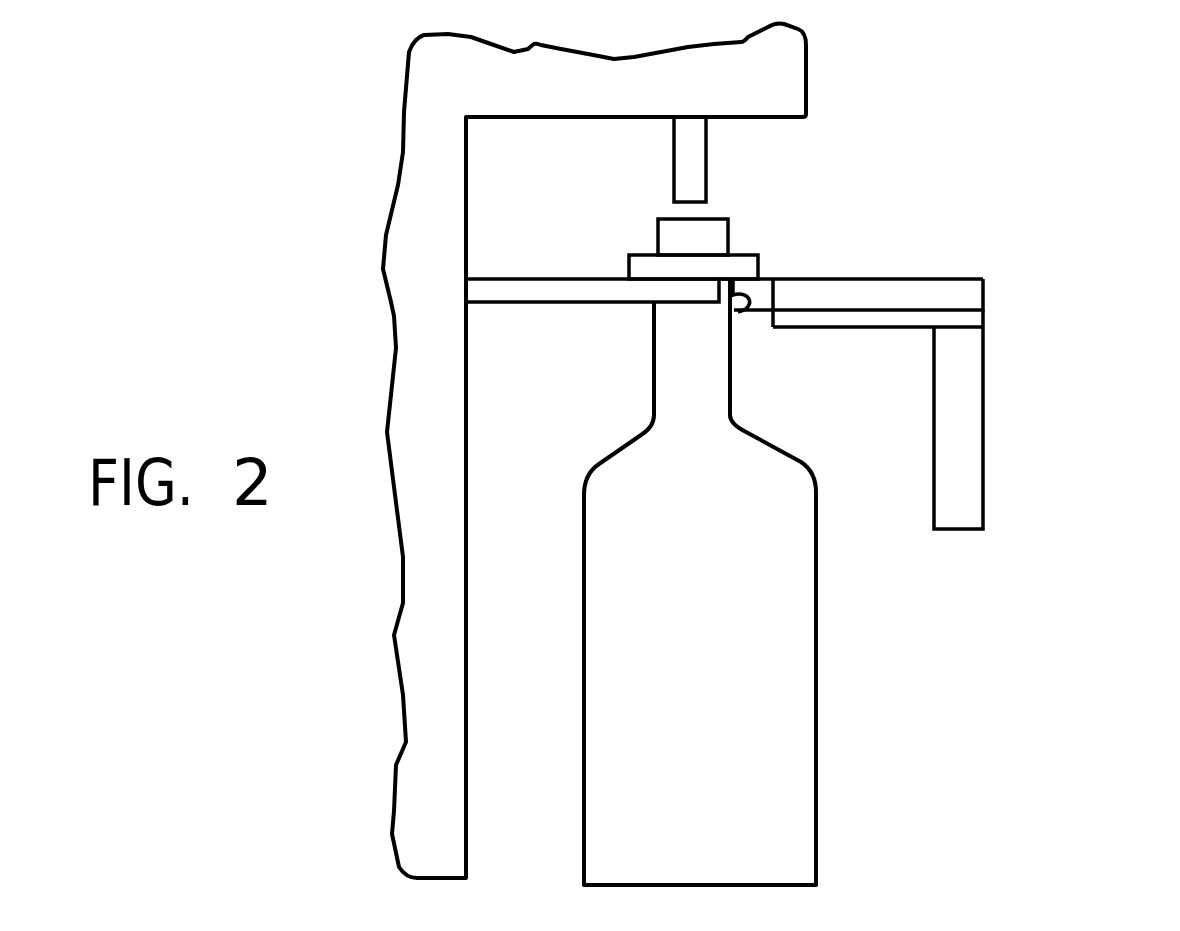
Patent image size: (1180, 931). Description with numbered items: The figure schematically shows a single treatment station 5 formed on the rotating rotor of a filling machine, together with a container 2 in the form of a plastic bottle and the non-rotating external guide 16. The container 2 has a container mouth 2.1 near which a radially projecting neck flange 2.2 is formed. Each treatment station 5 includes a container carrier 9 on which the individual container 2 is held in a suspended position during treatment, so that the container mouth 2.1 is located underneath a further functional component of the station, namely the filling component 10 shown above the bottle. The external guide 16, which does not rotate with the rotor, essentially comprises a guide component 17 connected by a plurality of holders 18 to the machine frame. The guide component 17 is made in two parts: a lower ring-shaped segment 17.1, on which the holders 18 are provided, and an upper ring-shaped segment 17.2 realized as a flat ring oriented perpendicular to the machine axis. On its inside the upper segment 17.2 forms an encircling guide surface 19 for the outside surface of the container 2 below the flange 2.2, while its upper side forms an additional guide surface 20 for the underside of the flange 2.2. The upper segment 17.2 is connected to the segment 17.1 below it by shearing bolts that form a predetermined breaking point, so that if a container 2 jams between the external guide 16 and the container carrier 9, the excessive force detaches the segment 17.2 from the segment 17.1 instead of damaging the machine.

The container 2 is at (793, 662).
The container mouth 2.1 is at (717, 212).
The neck flange 2.2 is at (743, 263).
The treatment station 5 is at (1028, 273).
The container carrier 9 is at (565, 287).
The filling component 10 is at (693, 157).
The external guide 16 is at (865, 260).
The guide component 17 is at (925, 268).
The ring-shaped segment 17.1 is at (869, 317).
The upper ring-shaped segment 17.2 is at (813, 297).
The holder 18 is at (973, 433).
The guide surface 19 is at (741, 312).
The additional guide surface 20 is at (775, 280).